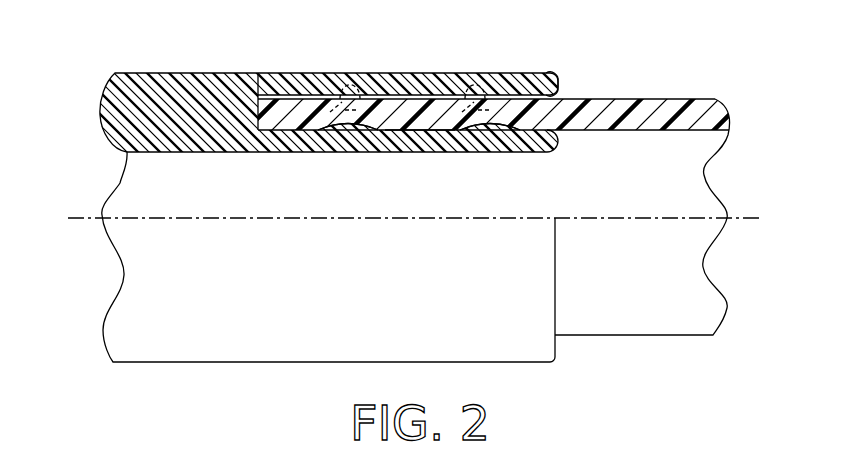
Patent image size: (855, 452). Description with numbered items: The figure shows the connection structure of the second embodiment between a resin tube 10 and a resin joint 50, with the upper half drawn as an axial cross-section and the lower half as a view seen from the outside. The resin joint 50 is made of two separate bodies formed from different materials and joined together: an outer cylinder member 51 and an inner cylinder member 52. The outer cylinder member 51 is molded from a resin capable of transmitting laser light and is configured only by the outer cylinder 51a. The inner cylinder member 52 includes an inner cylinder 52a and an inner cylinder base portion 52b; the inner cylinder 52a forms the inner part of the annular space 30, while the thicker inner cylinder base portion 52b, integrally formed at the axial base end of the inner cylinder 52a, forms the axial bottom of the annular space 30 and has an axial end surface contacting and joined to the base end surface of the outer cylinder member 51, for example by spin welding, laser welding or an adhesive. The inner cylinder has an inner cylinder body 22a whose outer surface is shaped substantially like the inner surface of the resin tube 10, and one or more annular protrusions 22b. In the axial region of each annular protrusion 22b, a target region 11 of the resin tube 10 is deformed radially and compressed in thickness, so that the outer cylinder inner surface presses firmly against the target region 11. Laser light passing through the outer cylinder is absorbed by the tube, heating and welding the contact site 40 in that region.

The resin tube 10 is at (690, 99).
The target region 11 is at (350, 100).
The inner cylinder body 22a is at (435, 130).
The annular protrusion 22b is at (360, 130).
The annular space 30 is at (283, 98).
The contact site 40 is at (368, 82).
The resin joint 50 is at (137, 70).
The outer cylinder member 51 is at (556, 74).
The outer cylinder 51a is at (530, 73).
The inner cylinder member 52 is at (172, 83).
The inner cylinder 52a is at (540, 148).
The inner cylinder base portion 52b is at (202, 140).